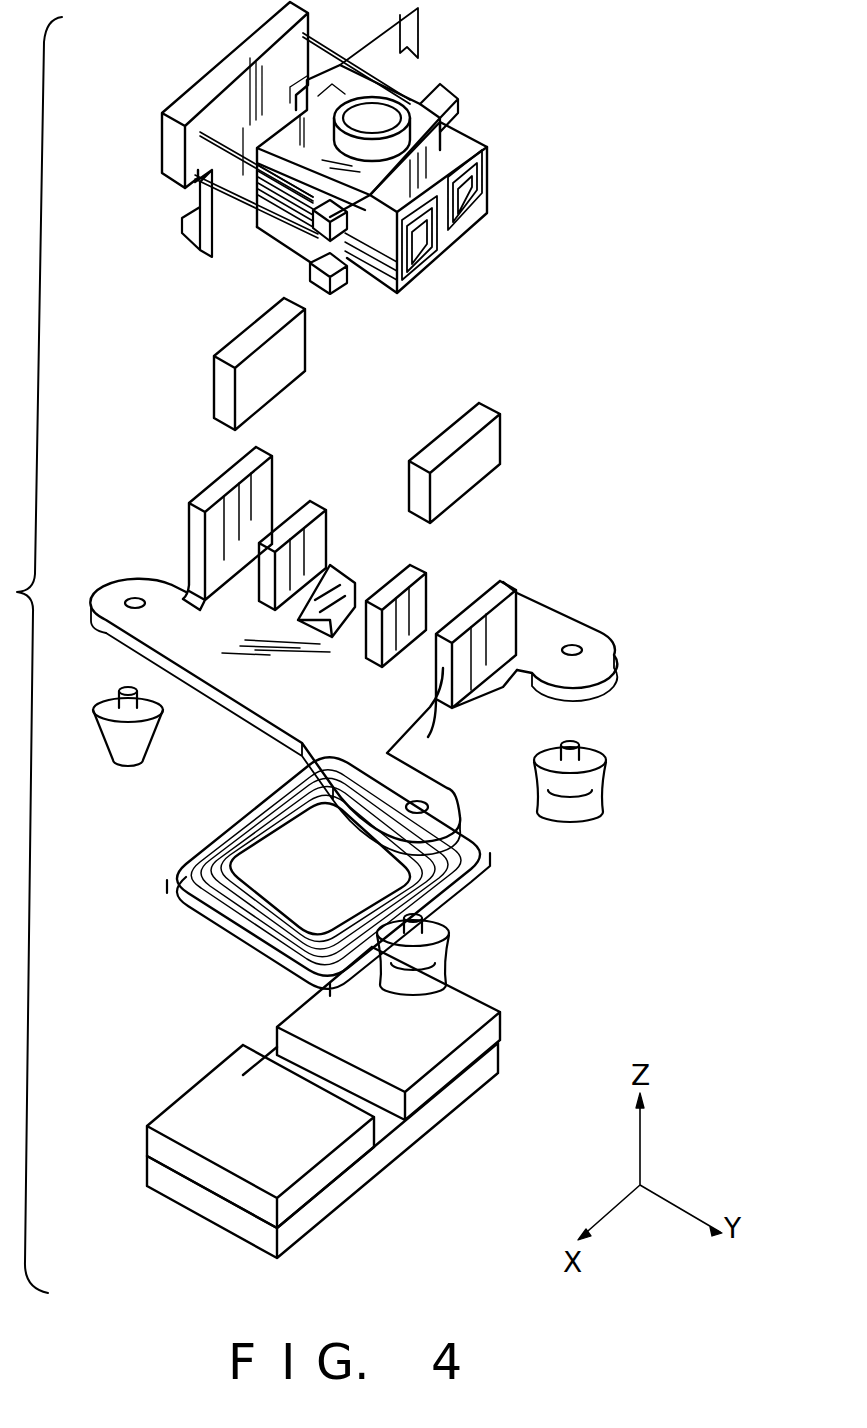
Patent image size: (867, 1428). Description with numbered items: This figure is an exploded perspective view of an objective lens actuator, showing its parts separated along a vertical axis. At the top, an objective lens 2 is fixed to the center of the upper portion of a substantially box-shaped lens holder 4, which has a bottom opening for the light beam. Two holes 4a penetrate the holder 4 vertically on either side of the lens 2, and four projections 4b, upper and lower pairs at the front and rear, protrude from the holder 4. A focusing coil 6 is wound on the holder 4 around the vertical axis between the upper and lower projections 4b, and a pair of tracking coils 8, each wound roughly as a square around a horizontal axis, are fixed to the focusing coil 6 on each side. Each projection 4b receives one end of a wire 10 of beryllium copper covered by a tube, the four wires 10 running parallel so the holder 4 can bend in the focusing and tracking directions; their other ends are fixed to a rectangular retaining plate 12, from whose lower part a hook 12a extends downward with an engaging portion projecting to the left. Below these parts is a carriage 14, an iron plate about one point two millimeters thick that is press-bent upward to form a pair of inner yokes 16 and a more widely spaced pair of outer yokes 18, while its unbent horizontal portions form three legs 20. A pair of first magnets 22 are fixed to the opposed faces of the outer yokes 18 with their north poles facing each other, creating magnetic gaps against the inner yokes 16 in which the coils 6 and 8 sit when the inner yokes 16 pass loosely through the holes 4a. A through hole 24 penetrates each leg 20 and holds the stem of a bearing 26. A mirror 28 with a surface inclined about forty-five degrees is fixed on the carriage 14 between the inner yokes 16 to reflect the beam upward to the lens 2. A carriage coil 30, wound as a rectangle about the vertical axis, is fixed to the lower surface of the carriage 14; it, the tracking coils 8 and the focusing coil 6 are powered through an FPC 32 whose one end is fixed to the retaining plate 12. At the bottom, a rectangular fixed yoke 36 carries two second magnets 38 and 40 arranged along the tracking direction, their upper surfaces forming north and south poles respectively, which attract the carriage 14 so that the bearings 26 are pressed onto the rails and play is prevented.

The objective lens 2 is at (380, 115).
The lens holder 4 is at (420, 140).
The holes 4a is at (325, 103).
The projections 4b is at (446, 100).
The focusing coil 6 is at (370, 257).
The tracking coils 8 is at (466, 231).
The wire 10 is at (238, 203).
The retaining plate 12 is at (232, 93).
The hook 12a is at (192, 236).
The carriage 14 is at (236, 678).
The inner yokes 16 is at (322, 528).
The outer yokes 18 is at (268, 488).
The legs 20 is at (124, 592).
The first magnets 22 is at (222, 386).
The through hole 24 is at (126, 600).
The bearing 26 is at (116, 742).
The mirror 28 is at (357, 587).
The carriage coil 30 is at (208, 916).
The FPC 32 is at (412, 48).
The fixed yoke 36 is at (367, 1168).
The second magnet 38 is at (184, 1110).
The second magnet 40 is at (490, 1037).